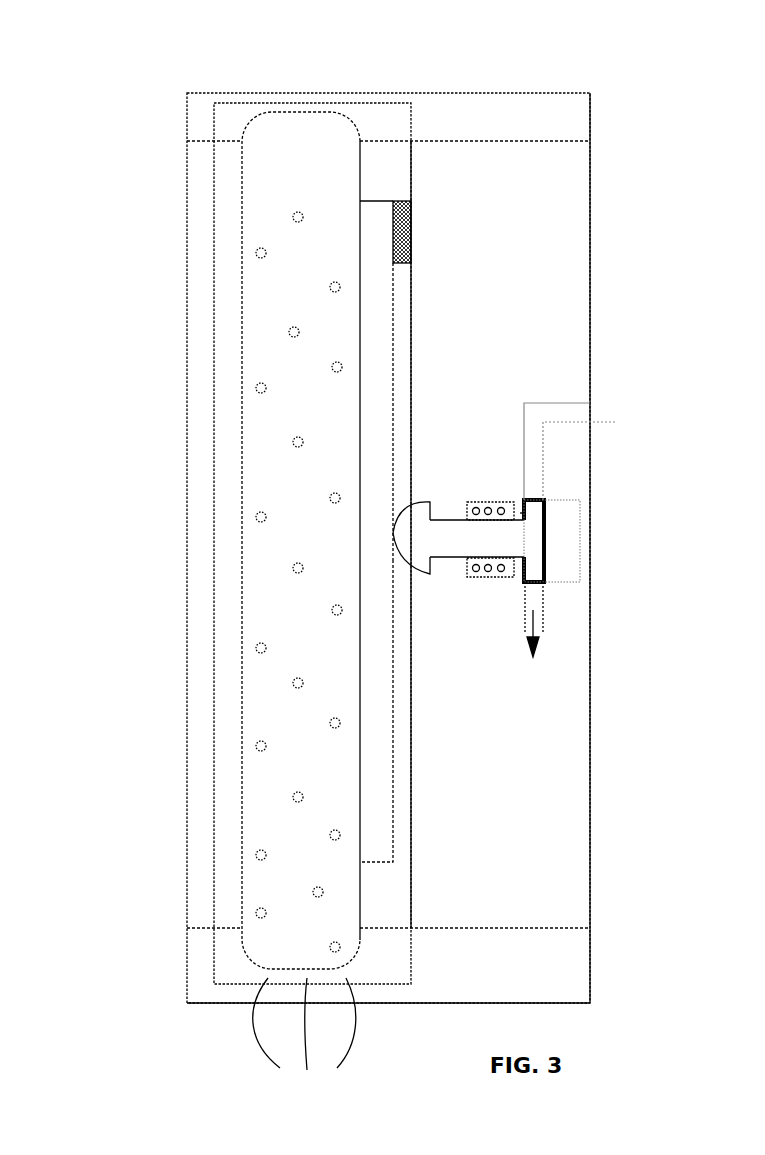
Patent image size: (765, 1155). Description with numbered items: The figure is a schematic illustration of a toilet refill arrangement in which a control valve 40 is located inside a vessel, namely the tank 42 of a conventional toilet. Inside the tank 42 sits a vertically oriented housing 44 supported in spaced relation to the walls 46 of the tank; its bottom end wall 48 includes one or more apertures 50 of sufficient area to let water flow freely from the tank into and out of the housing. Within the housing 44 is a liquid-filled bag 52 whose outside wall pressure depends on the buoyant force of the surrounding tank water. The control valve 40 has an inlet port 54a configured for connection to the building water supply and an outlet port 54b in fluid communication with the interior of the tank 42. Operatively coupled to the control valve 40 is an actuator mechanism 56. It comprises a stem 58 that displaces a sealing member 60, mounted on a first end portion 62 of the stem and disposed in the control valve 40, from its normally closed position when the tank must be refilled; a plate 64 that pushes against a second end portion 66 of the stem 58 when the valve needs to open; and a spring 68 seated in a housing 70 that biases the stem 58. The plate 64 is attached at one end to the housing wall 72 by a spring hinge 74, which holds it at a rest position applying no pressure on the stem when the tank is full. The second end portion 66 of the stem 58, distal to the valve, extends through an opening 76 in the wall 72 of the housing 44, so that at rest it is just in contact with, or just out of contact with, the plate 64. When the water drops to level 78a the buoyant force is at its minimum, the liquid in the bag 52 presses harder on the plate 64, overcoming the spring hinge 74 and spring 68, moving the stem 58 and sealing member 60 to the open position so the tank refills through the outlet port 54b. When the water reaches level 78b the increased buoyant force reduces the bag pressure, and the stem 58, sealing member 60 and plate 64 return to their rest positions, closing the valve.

The control valve 40 is at (560, 527).
The tank 42 is at (612, 763).
The housing 44 is at (375, 102).
The walls 46 is at (590, 858).
The bottom end wall 48 is at (242, 985).
The apertures 50 is at (304, 1044).
The bag 52 is at (272, 112).
The inlet port 54a is at (597, 412).
The outlet port 54b is at (535, 640).
The actuator mechanism 56 is at (429, 480).
The stem 58 is at (465, 543).
The sealing member 60 is at (546, 537).
The first end portion 62 is at (521, 512).
The plate 64 is at (373, 253).
The second end portion 66 is at (393, 532).
The spring 68 is at (480, 502).
The housing 70 is at (490, 578).
The housing wall 72 is at (408, 287).
The spring hinge 74 is at (413, 228).
The opening 76 is at (412, 568).
The level 78a is at (194, 927).
The level 78b is at (202, 141).